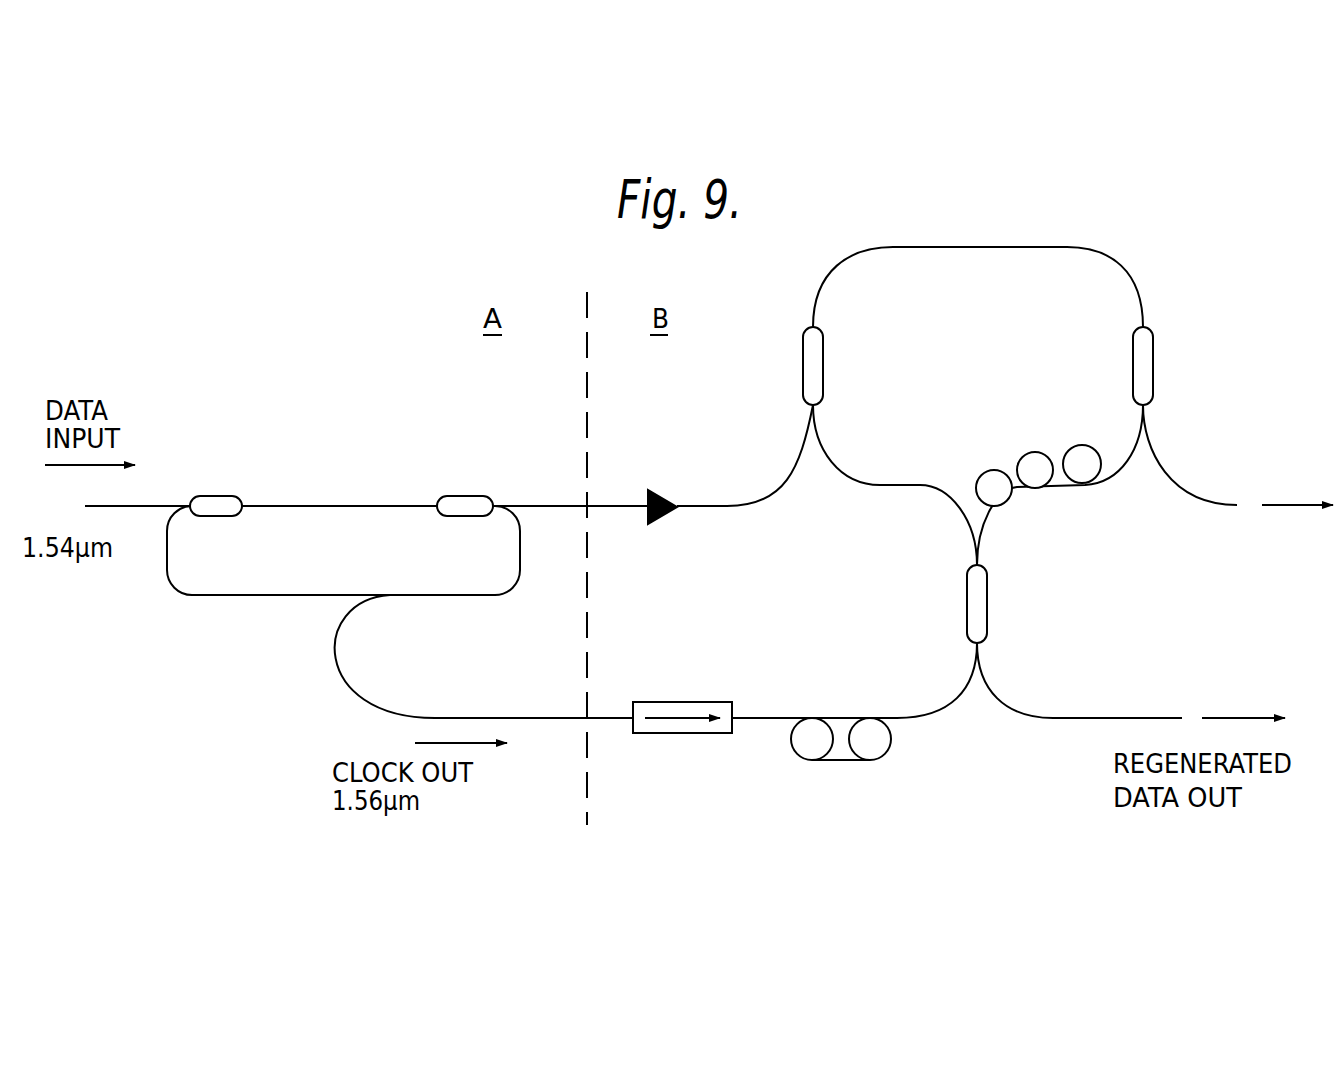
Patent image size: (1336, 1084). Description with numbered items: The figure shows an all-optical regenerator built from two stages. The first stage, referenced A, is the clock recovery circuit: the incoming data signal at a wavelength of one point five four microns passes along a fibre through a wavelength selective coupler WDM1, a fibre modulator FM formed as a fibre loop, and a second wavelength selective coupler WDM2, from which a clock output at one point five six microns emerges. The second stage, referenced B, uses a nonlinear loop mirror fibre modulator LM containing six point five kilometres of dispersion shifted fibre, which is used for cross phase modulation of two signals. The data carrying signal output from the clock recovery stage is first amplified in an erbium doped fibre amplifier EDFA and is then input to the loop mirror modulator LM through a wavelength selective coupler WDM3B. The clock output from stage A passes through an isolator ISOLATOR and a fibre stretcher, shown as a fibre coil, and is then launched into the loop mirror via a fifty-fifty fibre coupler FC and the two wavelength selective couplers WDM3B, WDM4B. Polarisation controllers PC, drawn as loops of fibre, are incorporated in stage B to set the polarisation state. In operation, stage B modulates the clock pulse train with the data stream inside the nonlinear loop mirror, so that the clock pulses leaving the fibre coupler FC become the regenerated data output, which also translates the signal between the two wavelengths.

The fibre modulator FM is at (365, 506).
The wavelength selective coupler WDM1 is at (228, 528).
The wavelength selective coupler WDM2 is at (451, 528).
The erbium doped fibre amplifier EDFA is at (680, 485).
The isolator ISOLATOR is at (673, 693).
The nonlinear loop mirror fibre modulator LM is at (1150, 268).
The wavelength selective coupler WDM3B is at (871, 366).
The wavelength selective coupler WDM4B is at (1196, 366).
The polarisation controllers PC is at (1038, 462).
The 50:50 fibre coupler FC is at (1026, 601).